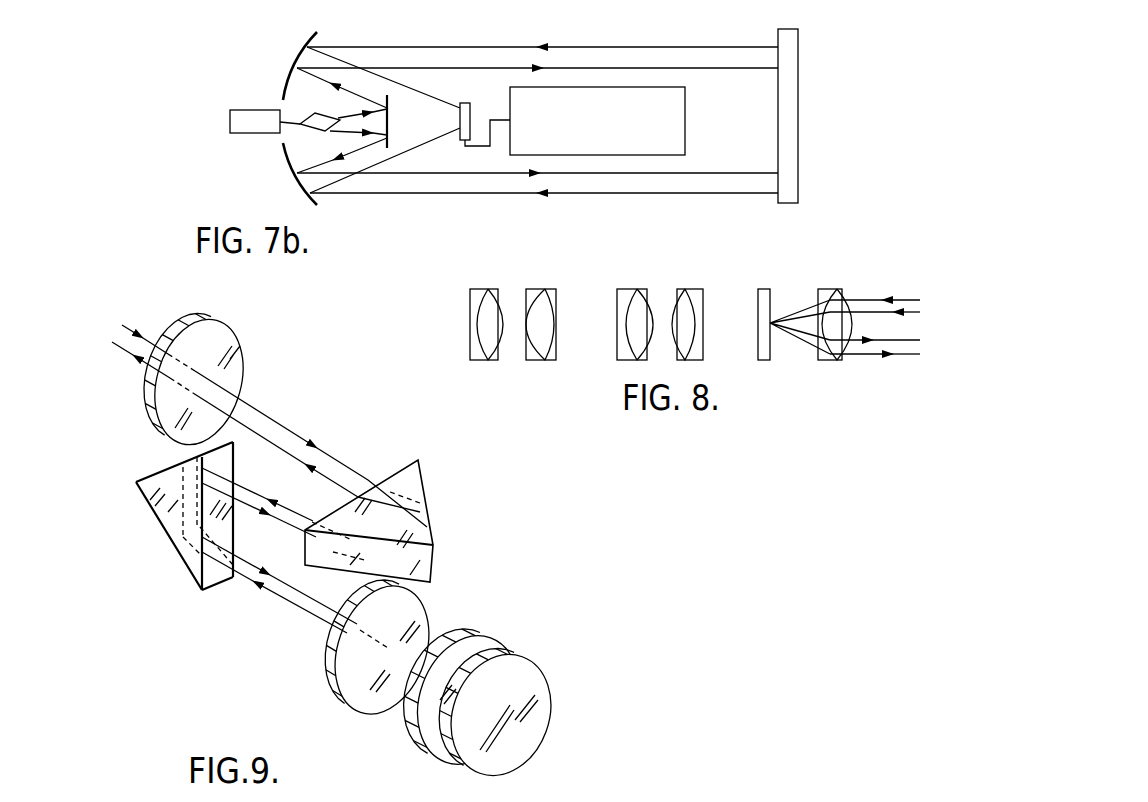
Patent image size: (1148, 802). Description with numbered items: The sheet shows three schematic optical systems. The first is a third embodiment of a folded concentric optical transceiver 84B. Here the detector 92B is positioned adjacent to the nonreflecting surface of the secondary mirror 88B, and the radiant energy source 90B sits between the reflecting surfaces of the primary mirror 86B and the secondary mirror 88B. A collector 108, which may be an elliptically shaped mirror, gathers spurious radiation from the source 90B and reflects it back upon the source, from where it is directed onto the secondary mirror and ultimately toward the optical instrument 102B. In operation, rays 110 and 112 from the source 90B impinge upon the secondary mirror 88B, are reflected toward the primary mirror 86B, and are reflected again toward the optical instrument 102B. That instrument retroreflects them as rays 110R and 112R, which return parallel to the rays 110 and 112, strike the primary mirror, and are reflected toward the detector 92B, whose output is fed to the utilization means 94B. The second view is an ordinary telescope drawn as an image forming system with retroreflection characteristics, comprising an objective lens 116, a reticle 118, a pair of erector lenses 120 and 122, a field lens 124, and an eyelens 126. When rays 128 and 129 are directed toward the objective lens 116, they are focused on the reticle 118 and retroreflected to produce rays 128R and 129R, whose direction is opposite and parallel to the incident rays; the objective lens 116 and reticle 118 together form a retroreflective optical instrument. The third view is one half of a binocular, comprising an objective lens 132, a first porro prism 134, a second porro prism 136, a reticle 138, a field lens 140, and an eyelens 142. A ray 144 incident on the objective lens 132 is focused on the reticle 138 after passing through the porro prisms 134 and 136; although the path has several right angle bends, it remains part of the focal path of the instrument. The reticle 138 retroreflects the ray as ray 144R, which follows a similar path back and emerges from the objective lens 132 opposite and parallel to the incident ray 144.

In FIG. 7B, the transceiver 84B is at (372, 36).
In FIG. 7B, the primary mirror 86B is at (289, 81).
In FIG. 7B, the secondary mirror 88B is at (389, 132).
In FIG. 7B, the radiant energy source 90B is at (311, 129).
In FIG. 7B, the detector 92B is at (468, 117).
In FIG. 7B, the utilization means 94B is at (685, 117).
In FIG. 7B, the optical instrument 102B is at (796, 148).
In FIG. 7B, the collector 108 is at (253, 108).
In FIG. 7B, the ray 110 is at (367, 111).
In FIG. 7B, the retroreflected ray 110R is at (537, 135).
In FIG. 7B, the ray 112 is at (357, 132).
In FIG. 7B, the retroreflected ray 112R is at (731, 47).
In FIG. 8, the objective lens 116 is at (835, 289).
In FIG. 8, the reticle 118 is at (763, 289).
In FIG. 8, the erector lens 120 is at (692, 276).
In FIG. 8, the erector lens 122 is at (630, 289).
In FIG. 8, the field lens 124 is at (545, 289).
In FIG. 8, the eyelens 126 is at (482, 289).
In FIG. 8, the ray 128 is at (907, 297).
In FIG. 8, the retroreflected ray 128R is at (907, 355).
In FIG. 8, the ray 129 is at (918, 312).
In FIG. 8, the retroreflected ray 129R is at (905, 340).
In FIG. 9, the objective lens 132 is at (227, 338).
In FIG. 9, the first porro prism 134 is at (405, 473).
In FIG. 9, the second porro prism 136 is at (170, 525).
In FIG. 9, the reticle 138 is at (342, 648).
In FIG. 9, the field lens 140 is at (420, 713).
In FIG. 9, the eyelens 142 is at (517, 750).
In FIG. 9, the ray 144 is at (125, 325).
In FIG. 9, the retroreflected ray 144R is at (113, 342).